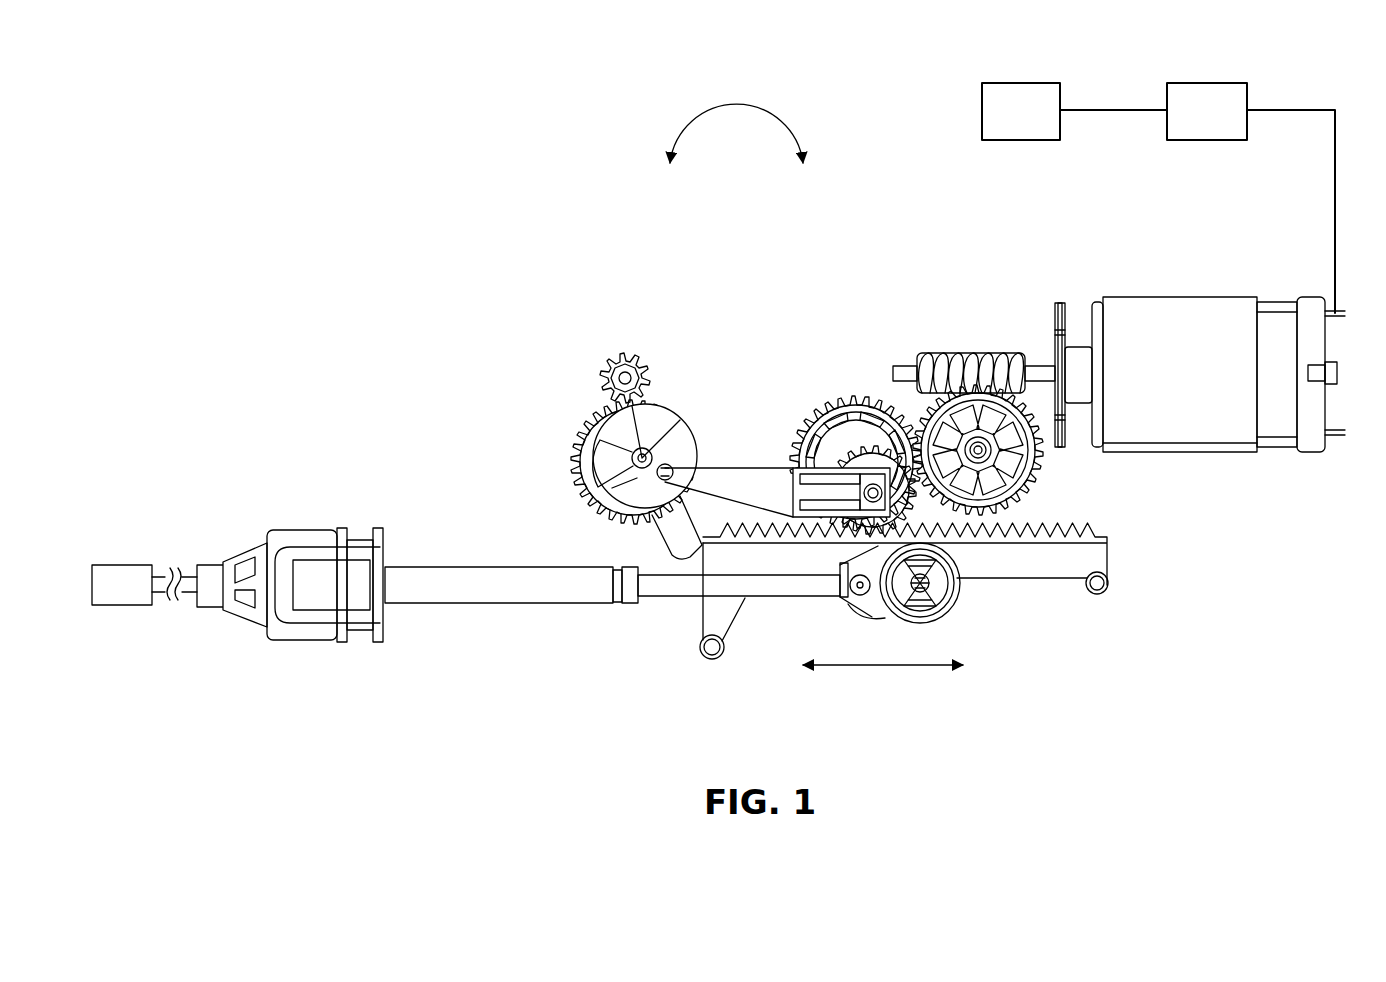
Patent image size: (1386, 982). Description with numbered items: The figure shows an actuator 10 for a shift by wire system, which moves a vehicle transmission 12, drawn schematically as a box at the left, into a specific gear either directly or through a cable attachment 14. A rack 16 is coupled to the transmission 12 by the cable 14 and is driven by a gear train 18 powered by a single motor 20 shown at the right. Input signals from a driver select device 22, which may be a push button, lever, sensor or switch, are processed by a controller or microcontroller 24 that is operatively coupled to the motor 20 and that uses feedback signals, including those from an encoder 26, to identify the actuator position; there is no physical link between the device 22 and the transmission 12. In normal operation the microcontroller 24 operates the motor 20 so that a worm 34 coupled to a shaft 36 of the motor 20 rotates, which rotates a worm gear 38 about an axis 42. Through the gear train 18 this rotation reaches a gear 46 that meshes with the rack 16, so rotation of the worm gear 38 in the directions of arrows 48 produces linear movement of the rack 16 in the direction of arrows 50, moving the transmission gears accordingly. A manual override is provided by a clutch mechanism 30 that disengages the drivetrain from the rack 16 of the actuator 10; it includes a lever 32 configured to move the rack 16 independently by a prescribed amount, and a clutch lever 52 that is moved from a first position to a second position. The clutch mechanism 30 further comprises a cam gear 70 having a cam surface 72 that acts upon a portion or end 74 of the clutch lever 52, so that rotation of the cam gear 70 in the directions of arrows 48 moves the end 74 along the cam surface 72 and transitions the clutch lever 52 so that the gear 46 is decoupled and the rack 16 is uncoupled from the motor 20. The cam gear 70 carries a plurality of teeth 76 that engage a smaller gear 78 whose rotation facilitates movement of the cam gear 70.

The actuator 10 is at (1013, 258).
The vehicle transmission 12 is at (120, 577).
The cable attachment 14 is at (495, 588).
The rack 16 is at (1033, 572).
The gear train 18 is at (947, 325).
The motor 20 is at (1172, 322).
The driver select device 22 is at (1010, 130).
The microcontroller 24 is at (1196, 130).
The encoder 26 is at (1061, 300).
The clutch mechanism 30 is at (832, 425).
The lever 32 is at (658, 540).
The worm 34 is at (972, 355).
The shaft 36 is at (902, 367).
The worm gear 38 is at (1045, 470).
The axis 42 is at (797, 410).
The gear 46 is at (868, 445).
The arrows 48 is at (737, 98).
The arrows 50 is at (885, 670).
The clutch lever 52 is at (722, 480).
The cam gear 70 is at (588, 430).
The cam surface 72 is at (617, 483).
The end of clutch lever 74 is at (672, 437).
The teeth 76 is at (587, 455).
The gear 78 is at (627, 355).